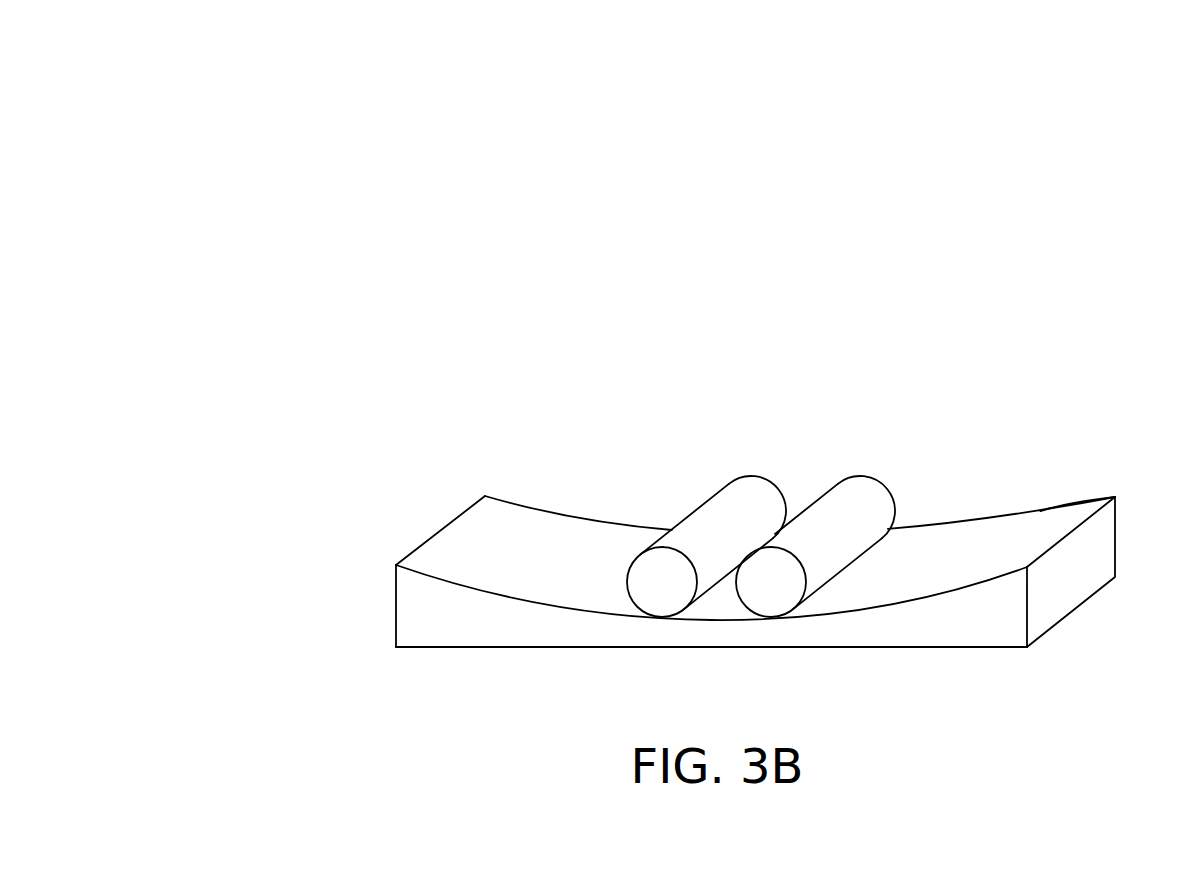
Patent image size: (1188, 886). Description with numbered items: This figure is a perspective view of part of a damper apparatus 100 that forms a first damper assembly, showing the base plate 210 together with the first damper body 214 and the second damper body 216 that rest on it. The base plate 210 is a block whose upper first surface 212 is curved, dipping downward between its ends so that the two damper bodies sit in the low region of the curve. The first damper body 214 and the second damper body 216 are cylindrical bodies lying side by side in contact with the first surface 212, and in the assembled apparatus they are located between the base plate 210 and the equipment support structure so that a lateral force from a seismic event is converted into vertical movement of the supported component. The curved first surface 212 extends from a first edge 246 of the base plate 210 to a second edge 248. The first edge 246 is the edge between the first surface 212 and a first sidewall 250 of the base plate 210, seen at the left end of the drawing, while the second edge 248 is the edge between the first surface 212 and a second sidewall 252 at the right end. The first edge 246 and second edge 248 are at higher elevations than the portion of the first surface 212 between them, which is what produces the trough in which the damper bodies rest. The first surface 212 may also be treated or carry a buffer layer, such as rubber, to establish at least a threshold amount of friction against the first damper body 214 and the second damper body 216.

The system 100 is at (175, 75).
The base plate 210 is at (417, 625).
The first surface 212 is at (583, 552).
The first damper body 214 is at (750, 485).
The second damper body 216 is at (862, 490).
The first edge 246 is at (463, 510).
The second edge 248 is at (1080, 523).
The first sidewall 250 is at (395, 590).
The second sidewall 252 is at (1072, 577).